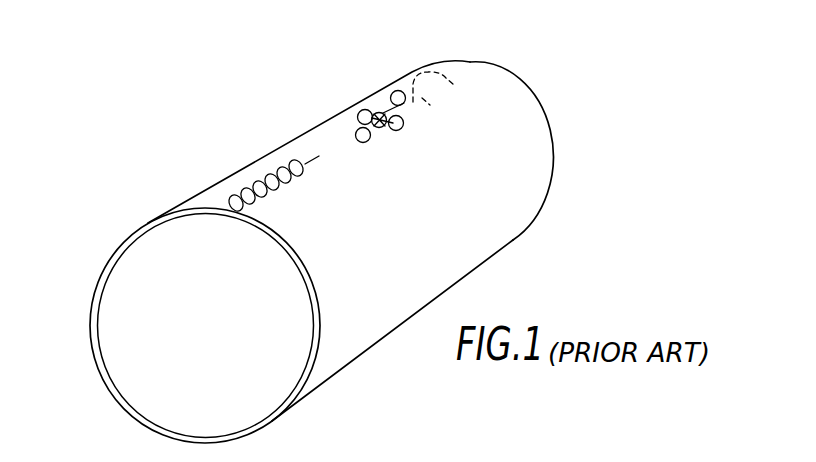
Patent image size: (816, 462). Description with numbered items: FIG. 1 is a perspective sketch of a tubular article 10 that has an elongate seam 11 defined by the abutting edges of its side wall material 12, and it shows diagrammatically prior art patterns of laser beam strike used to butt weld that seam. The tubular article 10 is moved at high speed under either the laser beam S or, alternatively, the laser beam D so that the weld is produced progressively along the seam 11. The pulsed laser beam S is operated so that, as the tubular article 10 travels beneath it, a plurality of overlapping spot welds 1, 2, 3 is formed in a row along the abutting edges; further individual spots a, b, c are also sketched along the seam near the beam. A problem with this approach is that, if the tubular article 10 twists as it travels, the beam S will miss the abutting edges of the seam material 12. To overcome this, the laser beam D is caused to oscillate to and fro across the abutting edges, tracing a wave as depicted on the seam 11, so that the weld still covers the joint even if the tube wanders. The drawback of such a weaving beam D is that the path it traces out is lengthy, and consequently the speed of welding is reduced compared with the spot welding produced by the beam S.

The tubular article 10 is at (102, 264).
The elongate seam 11 is at (453, 81).
The side wall material 12 is at (517, 145).
The overlapping spot weld 1 is at (228, 196).
The overlapping spot weld 2 is at (240, 190).
The overlapping spot weld 3 is at (254, 183).
The laser beam S is at (297, 168).
The detached bead a is at (360, 128).
The detached bead b is at (366, 110).
The detached bead c is at (384, 114).
The laser beam D is at (410, 94).